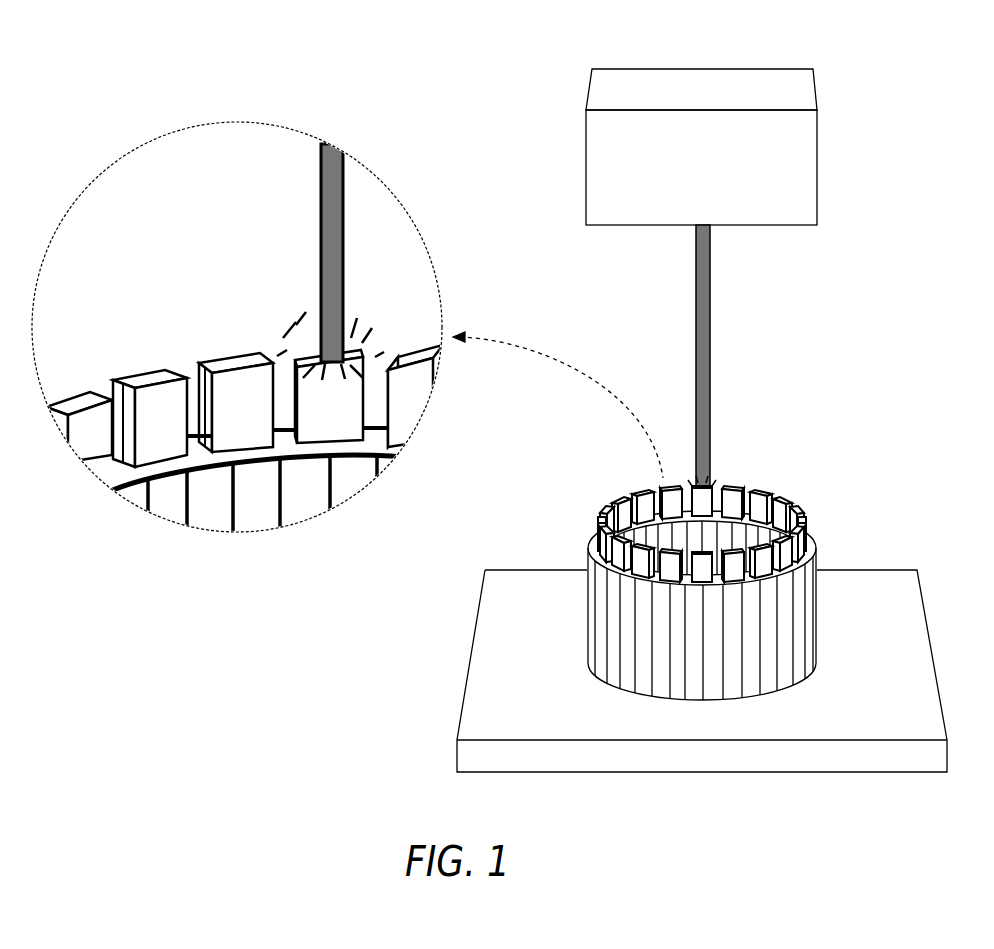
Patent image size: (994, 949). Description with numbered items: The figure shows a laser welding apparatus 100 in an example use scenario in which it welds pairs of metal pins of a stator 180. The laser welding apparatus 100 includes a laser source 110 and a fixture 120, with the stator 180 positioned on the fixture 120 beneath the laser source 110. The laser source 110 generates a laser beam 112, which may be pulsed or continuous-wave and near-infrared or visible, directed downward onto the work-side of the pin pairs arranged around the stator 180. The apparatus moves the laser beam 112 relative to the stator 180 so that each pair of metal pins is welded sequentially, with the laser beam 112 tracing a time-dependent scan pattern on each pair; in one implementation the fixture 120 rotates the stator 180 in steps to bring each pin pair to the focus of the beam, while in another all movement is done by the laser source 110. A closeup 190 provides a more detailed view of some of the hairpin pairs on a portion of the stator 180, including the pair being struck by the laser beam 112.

The laser welding apparatus 100 is at (532, 60).
The laser source 110 is at (818, 152).
The laser beam 112 is at (711, 421).
The fixture 120 is at (858, 568).
The stator 180 is at (576, 588).
The closeup 190 is at (119, 159).